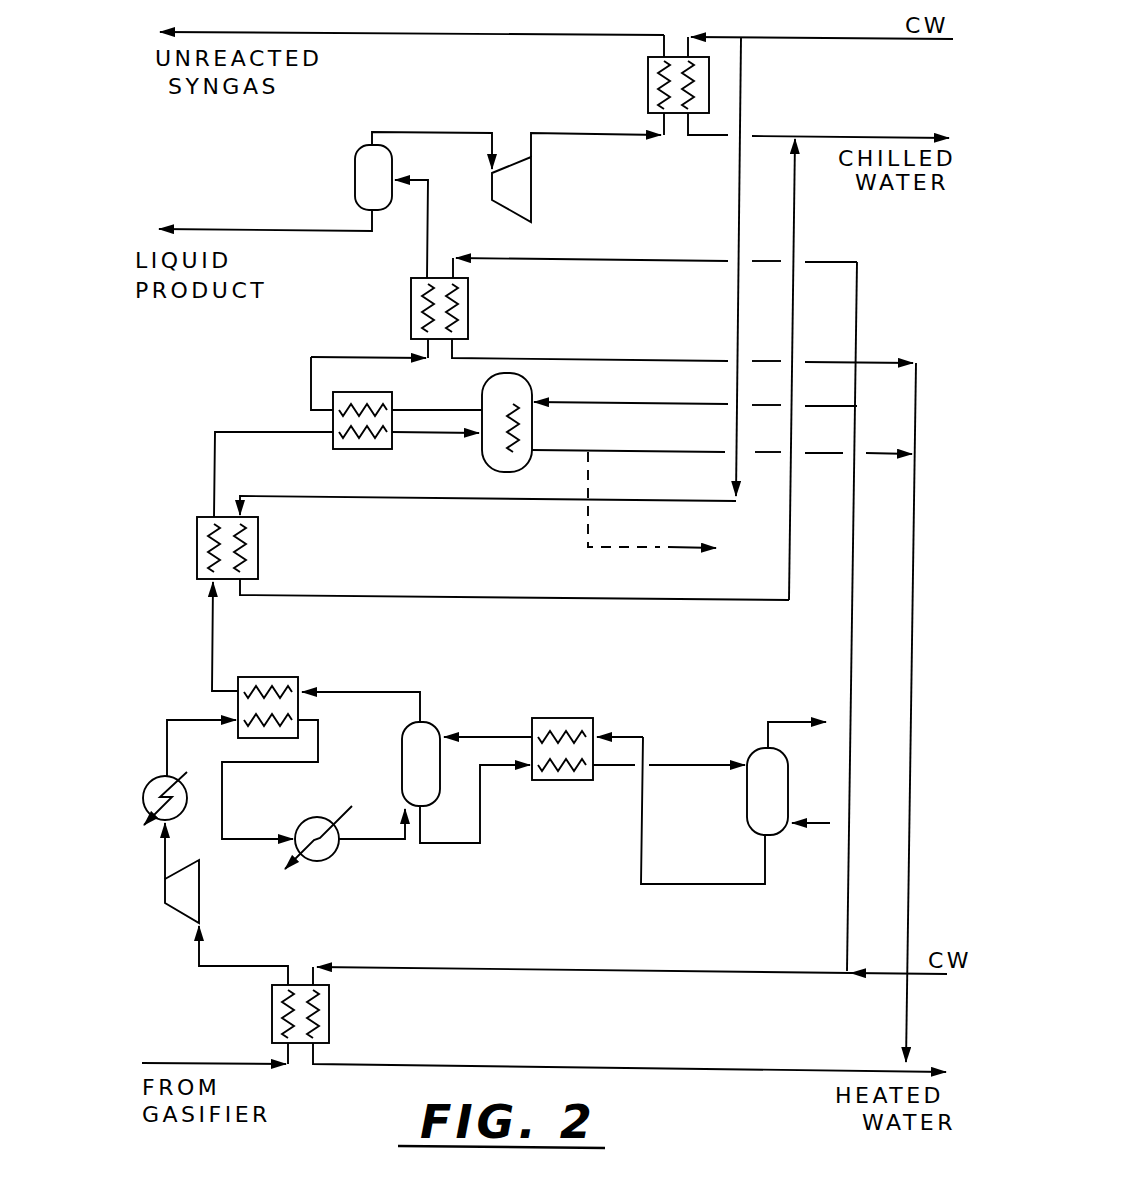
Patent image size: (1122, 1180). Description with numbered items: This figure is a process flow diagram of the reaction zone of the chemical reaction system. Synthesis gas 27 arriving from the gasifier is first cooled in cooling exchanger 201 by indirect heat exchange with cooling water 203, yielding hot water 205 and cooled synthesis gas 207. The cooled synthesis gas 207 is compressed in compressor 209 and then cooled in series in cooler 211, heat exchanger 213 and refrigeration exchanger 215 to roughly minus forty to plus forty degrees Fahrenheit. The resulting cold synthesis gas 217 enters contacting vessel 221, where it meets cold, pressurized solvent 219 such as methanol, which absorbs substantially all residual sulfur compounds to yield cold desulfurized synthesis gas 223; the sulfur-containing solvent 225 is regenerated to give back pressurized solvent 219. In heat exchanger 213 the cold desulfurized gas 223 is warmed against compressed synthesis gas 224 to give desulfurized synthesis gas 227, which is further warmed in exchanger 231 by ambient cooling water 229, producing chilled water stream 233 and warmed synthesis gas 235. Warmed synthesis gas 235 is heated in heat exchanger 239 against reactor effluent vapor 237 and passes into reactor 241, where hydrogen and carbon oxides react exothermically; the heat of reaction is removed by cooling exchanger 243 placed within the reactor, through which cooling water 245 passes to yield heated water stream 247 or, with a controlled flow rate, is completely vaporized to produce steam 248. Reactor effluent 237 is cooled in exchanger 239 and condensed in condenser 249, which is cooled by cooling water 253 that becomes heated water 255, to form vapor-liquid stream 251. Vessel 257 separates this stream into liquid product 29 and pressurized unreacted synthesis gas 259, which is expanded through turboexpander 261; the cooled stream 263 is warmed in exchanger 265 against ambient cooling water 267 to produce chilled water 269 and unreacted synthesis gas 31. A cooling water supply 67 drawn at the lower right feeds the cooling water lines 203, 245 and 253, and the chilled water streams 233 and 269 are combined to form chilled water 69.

The synthesis gas 27 is at (190, 1064).
The liquid product 29 is at (232, 230).
The unreacted synthesis gas 31 is at (385, 34).
The cooling water line 67 is at (884, 976).
The chilled water 69 is at (890, 136).
The cooling exchanger 201 is at (329, 1010).
The cooling water 203 is at (428, 967).
The hot water 205 is at (498, 1065).
The cooled synthesis gas 207 is at (222, 966).
The compressor 209 is at (182, 913).
The cooler 211 is at (150, 787).
The heat exchanger 213 is at (290, 677).
The refrigeration exchanger 215 is at (330, 857).
The cold synthesis gas 217 is at (375, 820).
The pressurized solvent 219 is at (502, 737).
The separator 221 is at (396, 738).
The cold desulfurized synthesis gas 223 is at (390, 691).
The compressed synthesis gas 224 is at (185, 720).
The sulfur-containing solvent 225 is at (483, 812).
The desulfurized synthesis gas 227 is at (213, 650).
The ambient cooling water 229 is at (393, 498).
The exchanger 231 is at (197, 540).
The chilled water stream 233 is at (398, 597).
The warmed synthesis gas 235 is at (214, 468).
The reactor effluent vapor 237 is at (432, 410).
The heat exchanger 239 is at (360, 449).
The reactor 241 is at (535, 385).
The cooling exchanger 243 is at (535, 426).
The cooling water 245 is at (632, 404).
The heated water stream 247 is at (690, 456).
The steam 248 is at (603, 545).
The condenser 249 is at (468, 301).
The vapor-liquid stream 251 is at (428, 208).
The cooling water 253 is at (692, 260).
The heated water 255 is at (690, 361).
The vessel 257 is at (355, 172).
The pressurized unreacted synthesis gas 259 is at (407, 133).
The turboexpander 261 is at (533, 186).
The cooled stream 263 is at (612, 135).
The exchanger 265 is at (648, 100).
The ambient cooling water 267 is at (735, 38).
The chilled water 269 is at (775, 135).